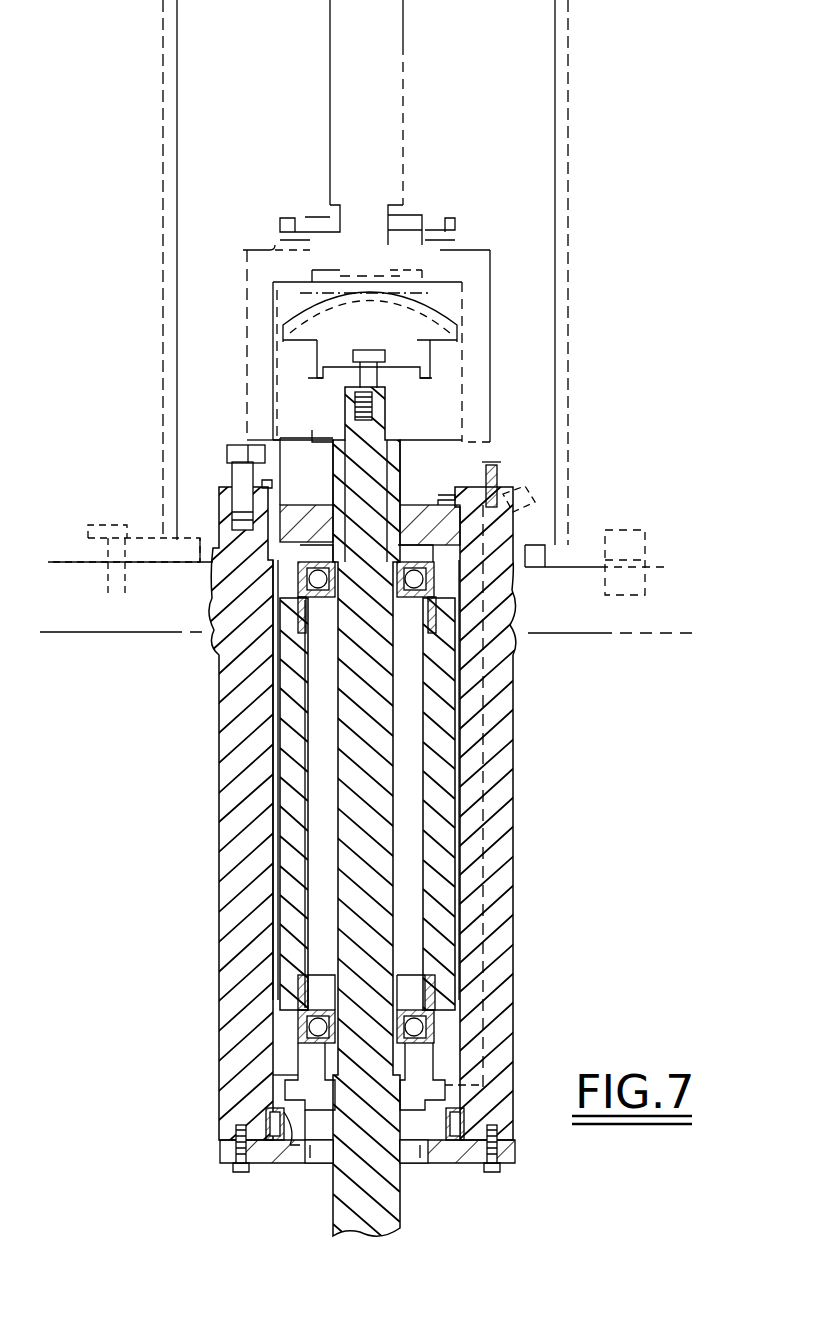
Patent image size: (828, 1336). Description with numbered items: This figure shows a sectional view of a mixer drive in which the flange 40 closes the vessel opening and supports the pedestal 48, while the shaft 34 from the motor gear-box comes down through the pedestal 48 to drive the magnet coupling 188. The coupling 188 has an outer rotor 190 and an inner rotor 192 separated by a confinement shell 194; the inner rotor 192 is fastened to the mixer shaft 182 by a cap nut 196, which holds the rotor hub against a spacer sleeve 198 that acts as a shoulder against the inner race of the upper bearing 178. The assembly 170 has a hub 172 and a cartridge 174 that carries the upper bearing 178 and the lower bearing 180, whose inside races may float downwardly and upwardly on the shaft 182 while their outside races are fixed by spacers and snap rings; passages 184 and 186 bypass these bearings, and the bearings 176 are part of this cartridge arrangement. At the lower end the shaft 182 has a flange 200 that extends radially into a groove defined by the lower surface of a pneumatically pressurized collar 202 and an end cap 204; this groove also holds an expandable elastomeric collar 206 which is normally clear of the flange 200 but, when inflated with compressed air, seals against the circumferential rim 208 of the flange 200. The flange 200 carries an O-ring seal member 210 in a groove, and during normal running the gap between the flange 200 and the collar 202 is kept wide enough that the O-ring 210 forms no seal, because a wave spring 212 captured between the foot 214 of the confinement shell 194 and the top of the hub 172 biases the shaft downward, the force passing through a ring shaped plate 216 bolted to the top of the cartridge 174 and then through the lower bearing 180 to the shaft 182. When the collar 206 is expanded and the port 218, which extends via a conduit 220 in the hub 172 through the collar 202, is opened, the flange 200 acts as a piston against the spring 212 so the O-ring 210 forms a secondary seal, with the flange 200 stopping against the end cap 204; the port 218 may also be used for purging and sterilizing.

The shaft 34 is at (405, 170).
The flange 40 is at (605, 635).
The pedestal 48 is at (575, 262).
The assembly 170 is at (219, 670).
The hub 172 is at (515, 905).
The cartridge 174 is at (292, 840).
The upper bearings 176 is at (366, 571).
The bearing 178 is at (292, 672).
The bearing 180 is at (300, 1032).
The shaft 182 is at (335, 872).
The passage 184 is at (440, 1048).
The passage 186 is at (455, 635).
The magnet coupling 188 is at (243, 332).
The outer rotor 190 is at (482, 373).
The inner rotor 192 is at (290, 387).
The confinement shell 194 is at (440, 298).
The cap nut 196 is at (380, 325).
The spacer sleeve 198 is at (400, 448).
The flange 200 is at (432, 1120).
The pneumatically pressurized collar 202 is at (290, 1077).
The end cap 204 is at (518, 1152).
The expandable elastomeric collar 206 is at (275, 1117).
The circumferential rim 208 is at (267, 1152).
The O-ring seal member 210 is at (328, 1158).
The wave spring 212 is at (492, 462).
The foot 214 is at (225, 475).
The ring shaped plate 216 is at (480, 518).
The port 218 is at (498, 508).
The conduit 220 is at (490, 975).